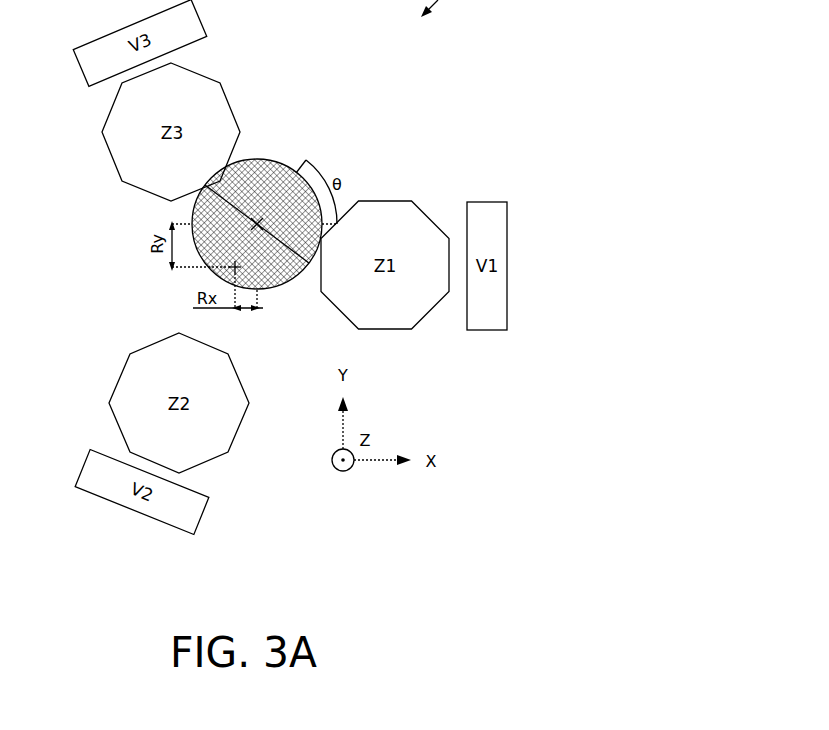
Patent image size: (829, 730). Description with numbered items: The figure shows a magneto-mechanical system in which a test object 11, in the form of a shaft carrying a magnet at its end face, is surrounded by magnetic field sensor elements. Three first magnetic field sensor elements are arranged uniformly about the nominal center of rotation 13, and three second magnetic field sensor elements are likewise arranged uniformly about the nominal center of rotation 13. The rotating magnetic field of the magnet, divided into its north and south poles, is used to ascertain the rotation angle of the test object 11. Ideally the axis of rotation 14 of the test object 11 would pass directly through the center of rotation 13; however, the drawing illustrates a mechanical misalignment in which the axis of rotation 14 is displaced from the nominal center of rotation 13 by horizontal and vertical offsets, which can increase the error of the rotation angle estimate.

The test object 11 is at (290, 148).
The center of rotation 13 is at (235, 267).
The axis of rotation 14 is at (257, 224).